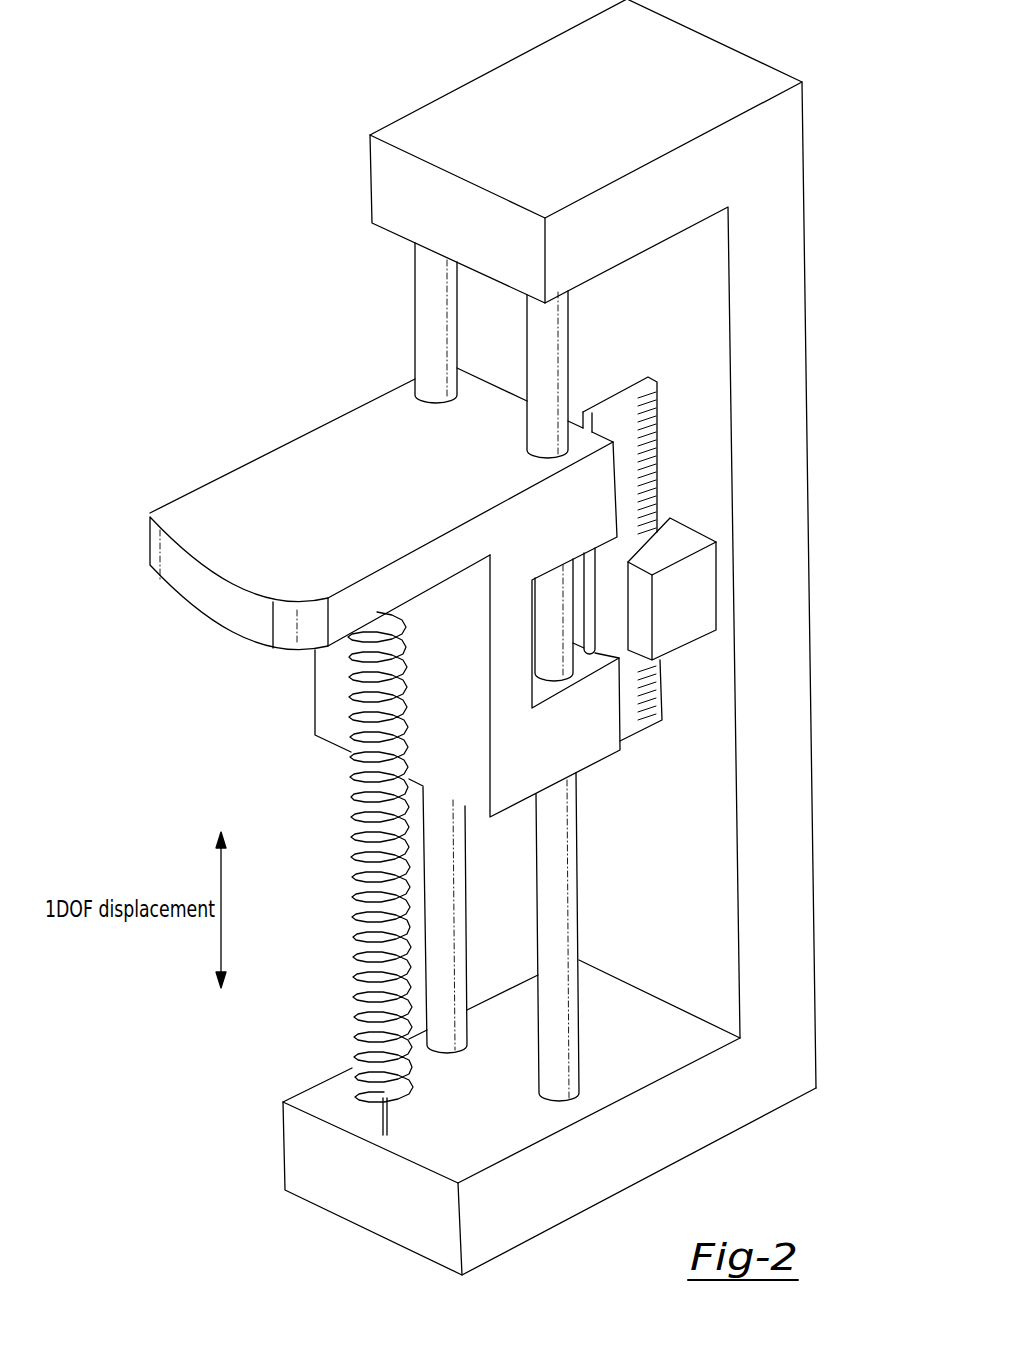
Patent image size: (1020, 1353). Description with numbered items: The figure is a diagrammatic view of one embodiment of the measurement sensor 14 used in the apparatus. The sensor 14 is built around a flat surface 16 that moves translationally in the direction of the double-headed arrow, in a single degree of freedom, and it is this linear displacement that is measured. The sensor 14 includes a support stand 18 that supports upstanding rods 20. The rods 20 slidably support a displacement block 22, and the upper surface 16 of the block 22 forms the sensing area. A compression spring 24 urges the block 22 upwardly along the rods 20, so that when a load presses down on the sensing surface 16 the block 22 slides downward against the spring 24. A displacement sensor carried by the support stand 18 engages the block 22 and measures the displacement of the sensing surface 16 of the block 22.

The measurement sensor 14 is at (371, 188).
The flat surface 16 is at (183, 517).
The support stand 18 is at (297, 1160).
The upstanding rods 20 is at (460, 902).
The displacement block 22 is at (338, 412).
The compression spring 24 is at (353, 830).